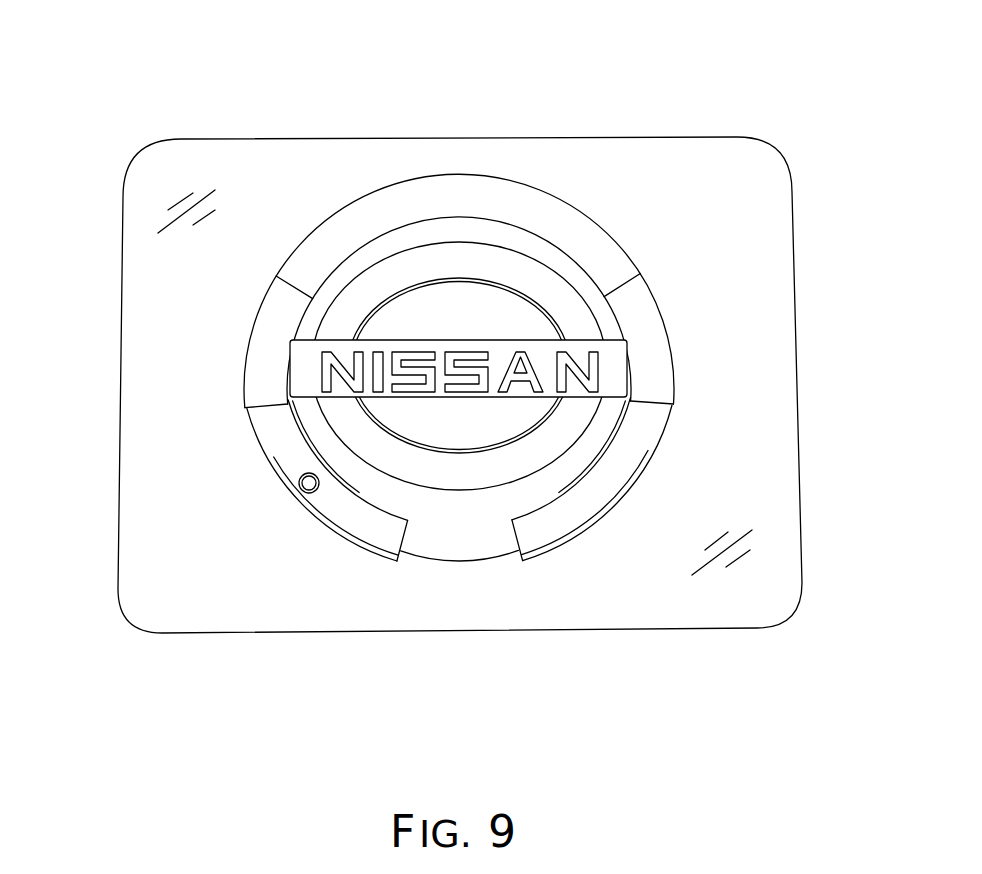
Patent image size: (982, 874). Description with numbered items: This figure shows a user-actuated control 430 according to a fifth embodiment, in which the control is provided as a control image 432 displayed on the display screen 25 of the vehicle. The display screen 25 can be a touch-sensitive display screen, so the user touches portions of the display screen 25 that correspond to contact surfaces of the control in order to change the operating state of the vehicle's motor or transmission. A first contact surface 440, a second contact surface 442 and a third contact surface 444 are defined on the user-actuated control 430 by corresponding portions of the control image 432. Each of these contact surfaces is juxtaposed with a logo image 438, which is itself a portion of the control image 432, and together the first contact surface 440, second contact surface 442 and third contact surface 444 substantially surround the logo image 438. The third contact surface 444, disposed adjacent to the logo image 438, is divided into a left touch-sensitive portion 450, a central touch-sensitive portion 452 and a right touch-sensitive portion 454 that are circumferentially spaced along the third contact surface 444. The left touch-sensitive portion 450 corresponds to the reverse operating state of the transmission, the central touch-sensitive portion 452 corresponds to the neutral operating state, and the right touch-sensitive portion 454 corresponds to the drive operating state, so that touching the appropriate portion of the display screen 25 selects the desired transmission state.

The display screen 25 is at (207, 138).
The user-actuated control 430 is at (148, 276).
The control image 432 is at (330, 138).
The logo image 438 is at (593, 418).
The first contact surface 440 is at (645, 445).
The second contact surface 442 is at (282, 467).
The third contact surface 444 is at (637, 252).
The left touch-sensitive portion 450 is at (310, 228).
The central touch-sensitive portion 452 is at (455, 176).
The right touch-sensitive portion 454 is at (588, 227).